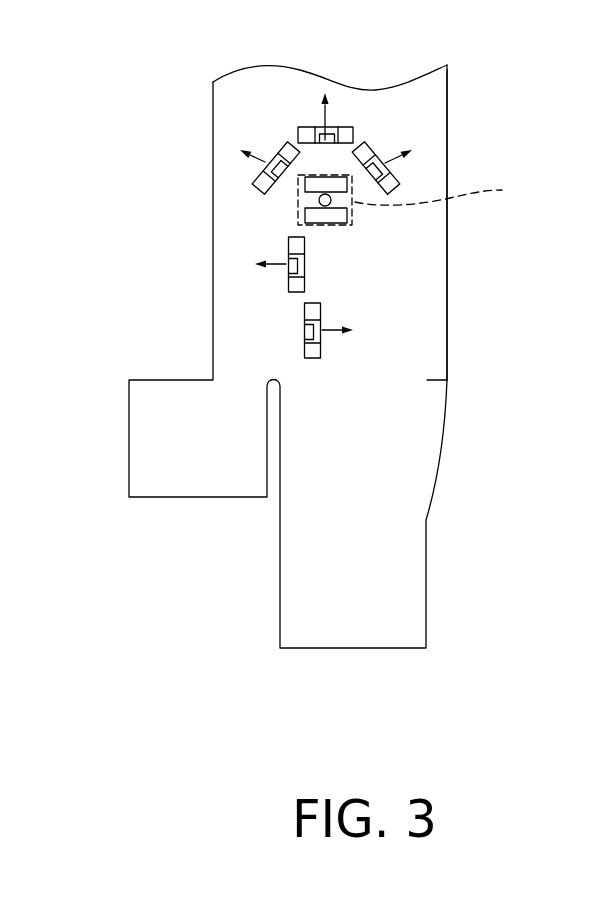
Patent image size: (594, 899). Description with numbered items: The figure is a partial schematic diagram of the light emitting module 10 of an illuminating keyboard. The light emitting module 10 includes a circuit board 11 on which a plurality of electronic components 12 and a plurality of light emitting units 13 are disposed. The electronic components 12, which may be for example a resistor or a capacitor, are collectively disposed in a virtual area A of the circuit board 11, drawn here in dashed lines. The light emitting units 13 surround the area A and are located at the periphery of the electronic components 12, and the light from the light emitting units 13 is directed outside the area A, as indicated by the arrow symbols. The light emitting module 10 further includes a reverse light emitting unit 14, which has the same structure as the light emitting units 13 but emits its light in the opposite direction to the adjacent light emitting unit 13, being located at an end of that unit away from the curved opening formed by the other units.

The light emitting module 10 is at (106, 140).
The circuit board 11 is at (427, 143).
The electronic components 12 is at (320, 200).
The light emitting units 13 is at (370, 148).
The reverse light emitting unit 14 is at (316, 328).
The area A is at (438, 191).